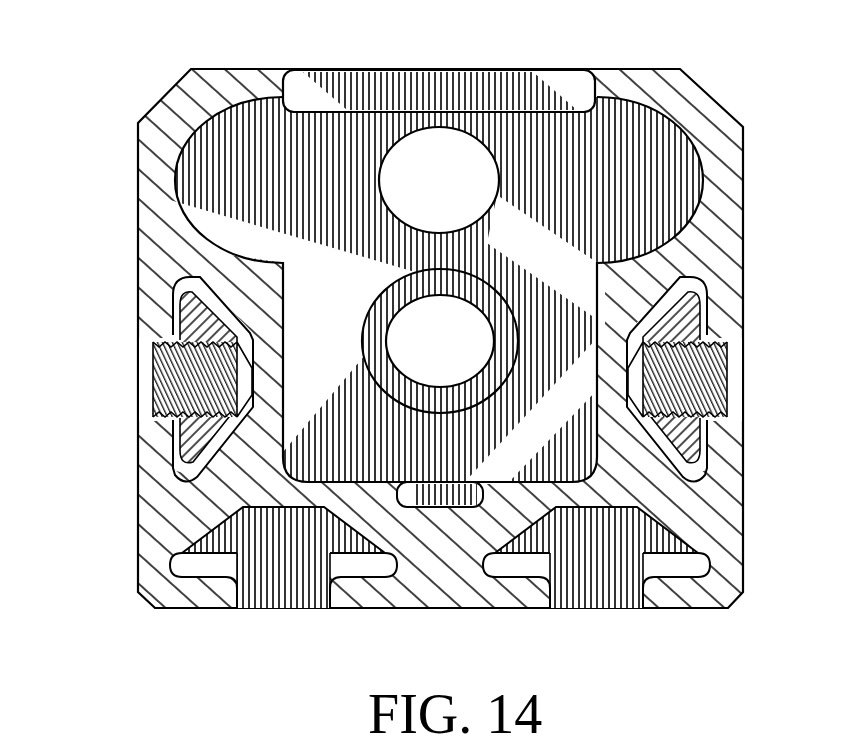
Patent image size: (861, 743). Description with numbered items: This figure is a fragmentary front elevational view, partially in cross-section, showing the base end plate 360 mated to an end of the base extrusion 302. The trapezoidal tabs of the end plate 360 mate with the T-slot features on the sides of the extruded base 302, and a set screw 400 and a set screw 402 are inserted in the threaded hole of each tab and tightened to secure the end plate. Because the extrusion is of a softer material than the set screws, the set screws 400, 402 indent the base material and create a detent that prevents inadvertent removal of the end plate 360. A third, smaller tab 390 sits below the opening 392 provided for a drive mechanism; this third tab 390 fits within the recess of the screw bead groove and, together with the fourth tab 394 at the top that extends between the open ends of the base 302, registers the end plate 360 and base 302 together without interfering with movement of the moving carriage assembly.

The base extrusion 302 is at (718, 497).
The base end plate 360 is at (233, 179).
The third tab 390 is at (467, 506).
The opening 392 is at (432, 341).
The fourth tab 394 is at (552, 90).
The set screw 400 is at (168, 373).
The set screw 402 is at (700, 375).